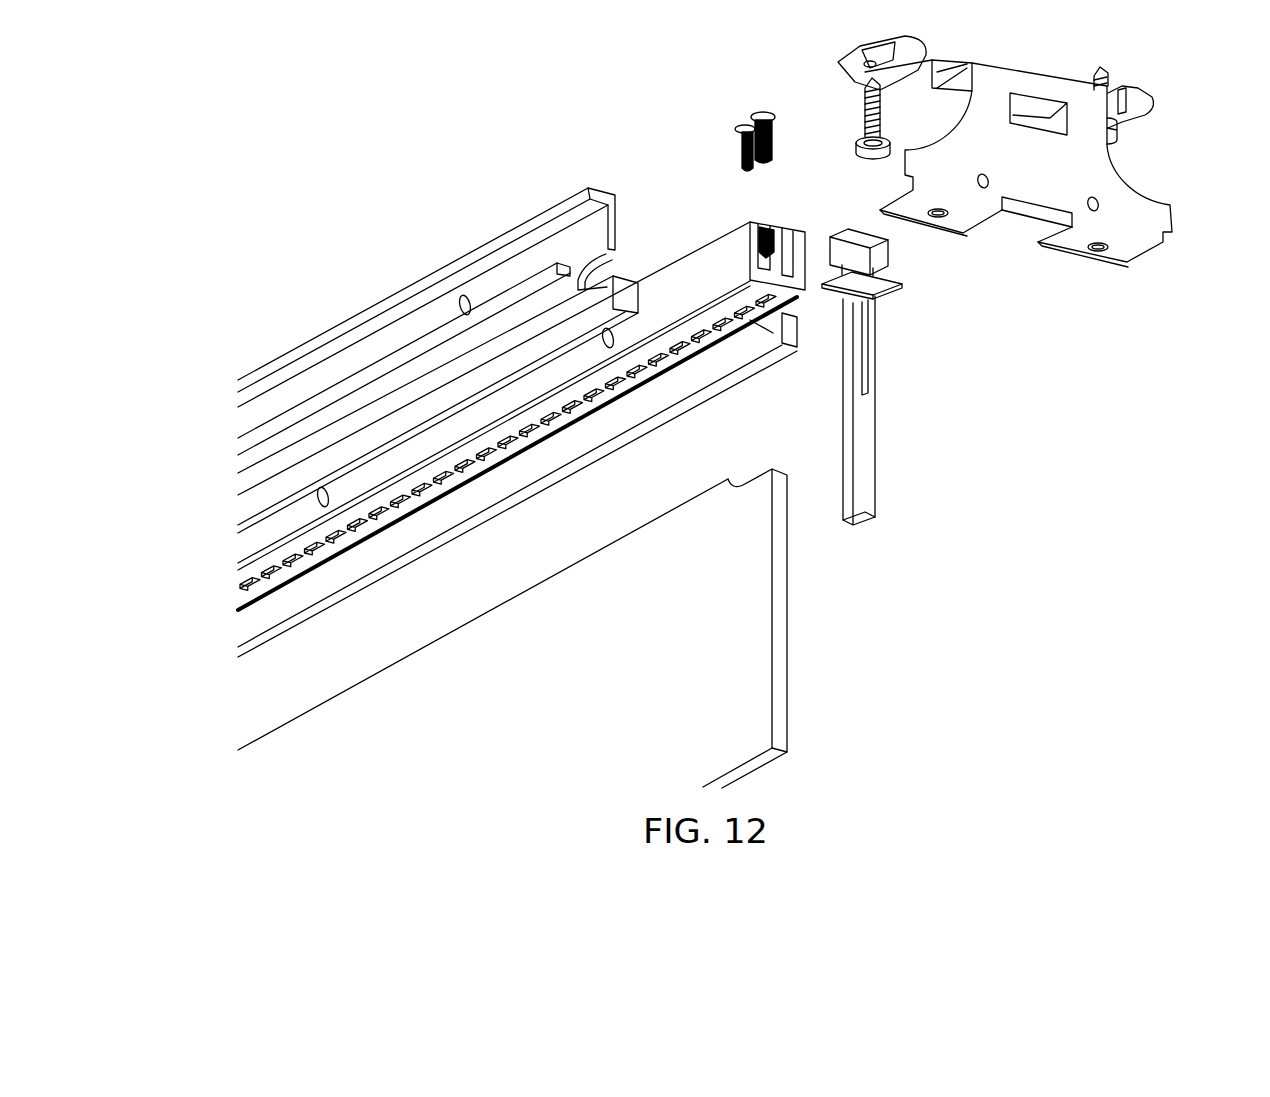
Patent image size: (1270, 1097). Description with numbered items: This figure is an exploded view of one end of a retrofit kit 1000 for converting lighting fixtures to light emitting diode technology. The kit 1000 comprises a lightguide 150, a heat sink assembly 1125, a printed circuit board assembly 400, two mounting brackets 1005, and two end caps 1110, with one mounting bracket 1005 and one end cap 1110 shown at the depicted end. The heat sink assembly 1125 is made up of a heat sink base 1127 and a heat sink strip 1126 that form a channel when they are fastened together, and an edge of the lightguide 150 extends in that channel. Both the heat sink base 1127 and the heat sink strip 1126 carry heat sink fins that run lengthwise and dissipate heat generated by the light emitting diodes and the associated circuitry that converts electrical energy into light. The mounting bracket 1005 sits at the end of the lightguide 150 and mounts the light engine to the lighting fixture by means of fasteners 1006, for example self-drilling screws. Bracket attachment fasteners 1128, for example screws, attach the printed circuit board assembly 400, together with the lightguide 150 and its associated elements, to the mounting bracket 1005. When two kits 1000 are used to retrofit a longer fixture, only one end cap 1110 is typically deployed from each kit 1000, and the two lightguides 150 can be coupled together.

The retrofit kit 1000 is at (1080, 744).
The heat sink assembly 1125 is at (313, 178).
The heat sink strip 1126 is at (402, 291).
The heat sink base 1127 is at (690, 255).
The bracket attachment fasteners 1128 is at (735, 125).
The printed circuit board assembly 400 is at (745, 345).
The lightguide 150 is at (787, 698).
The end cap 1110 is at (882, 442).
The mounting bracket 1005 is at (1033, 207).
The fasteners 1006 is at (862, 106).